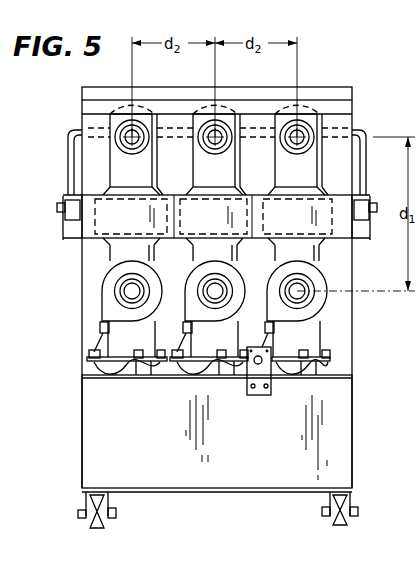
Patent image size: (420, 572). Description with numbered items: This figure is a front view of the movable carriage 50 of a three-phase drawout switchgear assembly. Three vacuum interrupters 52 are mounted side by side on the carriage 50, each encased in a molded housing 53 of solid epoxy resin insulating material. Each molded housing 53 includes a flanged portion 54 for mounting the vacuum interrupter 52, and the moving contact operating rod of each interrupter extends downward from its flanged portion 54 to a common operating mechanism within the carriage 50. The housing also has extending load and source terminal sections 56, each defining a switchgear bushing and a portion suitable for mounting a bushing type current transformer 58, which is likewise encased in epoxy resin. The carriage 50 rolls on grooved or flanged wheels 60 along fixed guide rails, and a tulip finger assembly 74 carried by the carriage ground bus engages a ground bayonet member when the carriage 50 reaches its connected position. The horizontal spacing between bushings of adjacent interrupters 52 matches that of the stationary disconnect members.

The movable carriage 50 is at (358, 420).
The vacuum interrupter 52 is at (154, 117).
The molded housing 53 is at (138, 177).
The flanged portion 54 is at (150, 357).
The terminal section 56 is at (310, 306).
The bushing type current transformer 58 is at (322, 278).
The grooved or flanged wheel 60 is at (88, 500).
The tulip finger assembly 74 is at (270, 356).